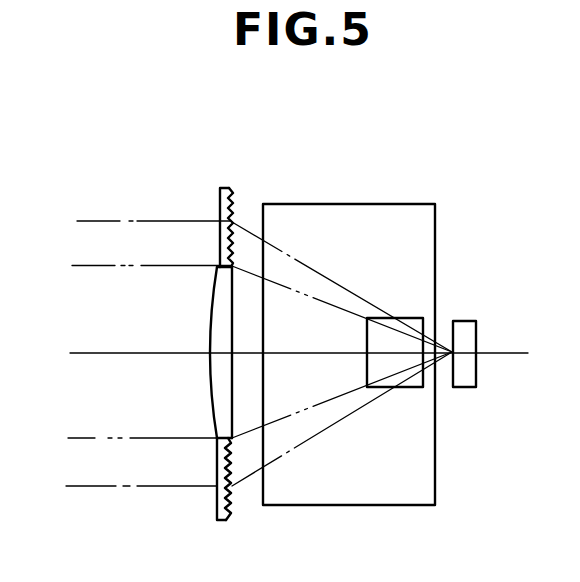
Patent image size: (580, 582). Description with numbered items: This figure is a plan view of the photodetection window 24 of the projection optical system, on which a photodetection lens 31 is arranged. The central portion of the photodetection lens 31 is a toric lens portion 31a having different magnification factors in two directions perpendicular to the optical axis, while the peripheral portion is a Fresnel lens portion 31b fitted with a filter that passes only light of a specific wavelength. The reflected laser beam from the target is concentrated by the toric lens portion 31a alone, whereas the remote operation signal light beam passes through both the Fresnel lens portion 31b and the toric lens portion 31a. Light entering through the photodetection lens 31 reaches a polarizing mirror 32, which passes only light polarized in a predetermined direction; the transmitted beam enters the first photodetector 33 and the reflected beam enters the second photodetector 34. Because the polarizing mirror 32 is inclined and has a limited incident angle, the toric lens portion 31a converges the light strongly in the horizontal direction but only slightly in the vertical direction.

The photodetection window 24 is at (140, 213).
The photodetection lens 31 is at (126, 334).
The toric lens portion 31a is at (210, 334).
The Fresnel lens portion 31b is at (213, 509).
The polarizing mirror 32 is at (370, 204).
The first photodetector 33 is at (462, 321).
The second photodetector 34 is at (412, 388).